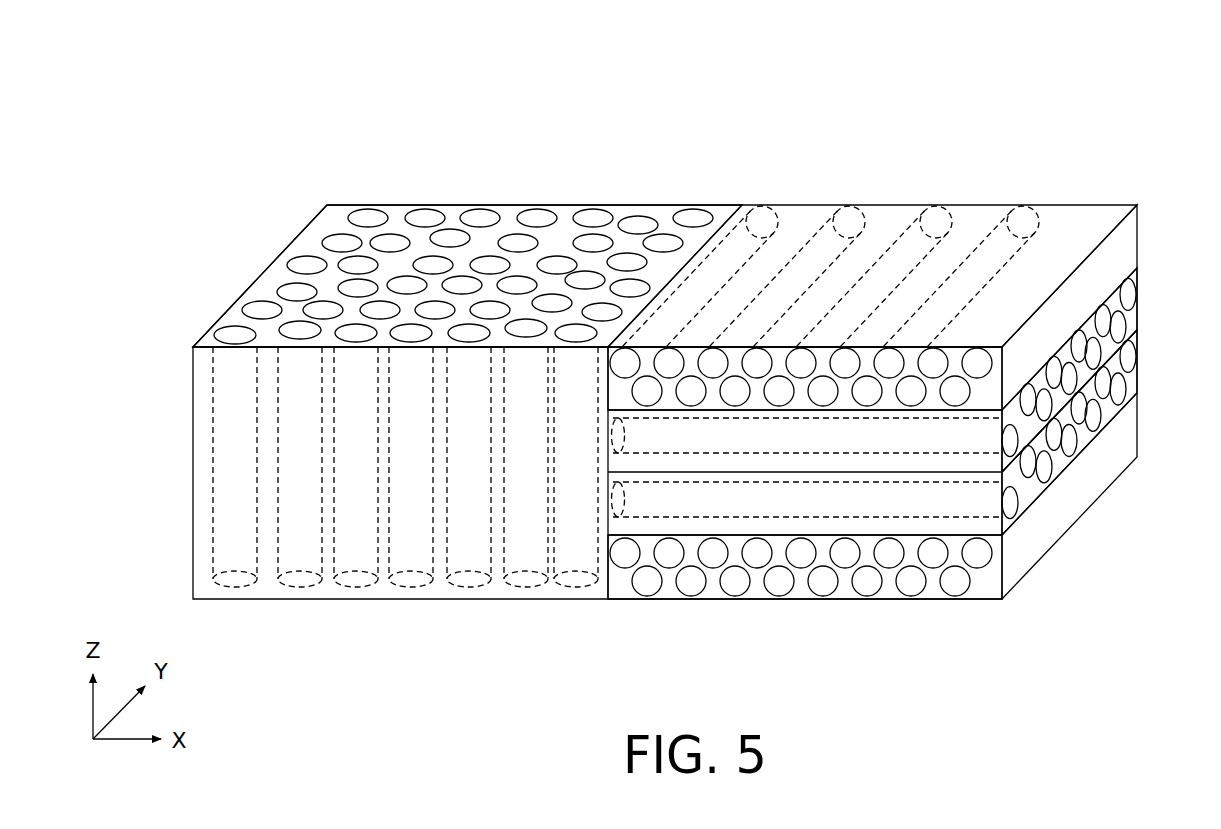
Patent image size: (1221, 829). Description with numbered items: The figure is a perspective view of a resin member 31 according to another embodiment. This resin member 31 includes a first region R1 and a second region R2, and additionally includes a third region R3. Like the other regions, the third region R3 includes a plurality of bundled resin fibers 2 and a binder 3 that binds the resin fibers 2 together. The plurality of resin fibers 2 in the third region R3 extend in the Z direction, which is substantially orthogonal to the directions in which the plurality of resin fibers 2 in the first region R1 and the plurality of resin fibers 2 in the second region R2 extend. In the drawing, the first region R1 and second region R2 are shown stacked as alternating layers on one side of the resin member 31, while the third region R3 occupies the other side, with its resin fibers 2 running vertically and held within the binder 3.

The resin member 31 is at (726, 111).
The resin fibers 2 is at (477, 217).
The binder 3 is at (343, 217).
The first region R1 is at (1142, 241).
The second region R2 is at (1142, 302).
The third region R3 is at (176, 393).